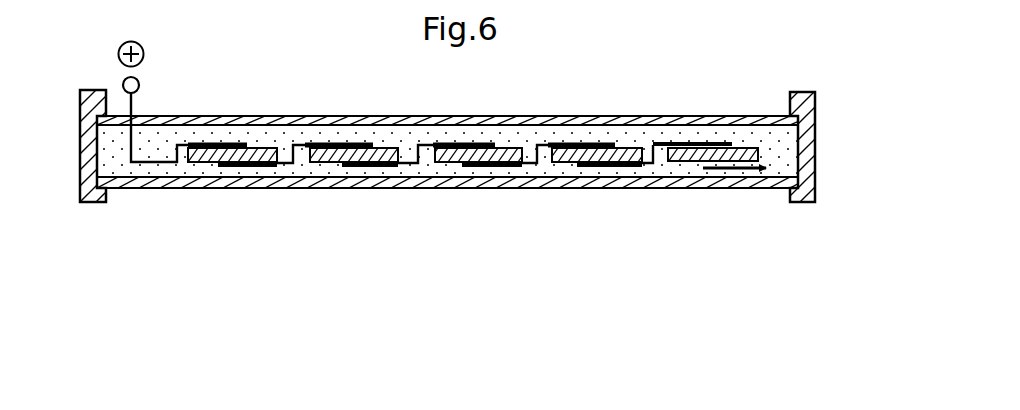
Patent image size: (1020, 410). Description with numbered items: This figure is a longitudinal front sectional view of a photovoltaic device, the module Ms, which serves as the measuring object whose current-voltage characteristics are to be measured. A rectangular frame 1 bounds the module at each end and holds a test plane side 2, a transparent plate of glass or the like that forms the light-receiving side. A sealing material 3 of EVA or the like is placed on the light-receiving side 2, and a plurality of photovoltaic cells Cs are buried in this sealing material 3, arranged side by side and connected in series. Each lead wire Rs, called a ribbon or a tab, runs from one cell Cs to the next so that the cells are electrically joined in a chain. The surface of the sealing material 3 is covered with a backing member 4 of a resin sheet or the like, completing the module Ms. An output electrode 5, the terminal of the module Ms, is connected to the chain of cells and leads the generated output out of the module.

The rectangular frame 1 is at (82, 152).
The test plane side 2 is at (272, 187).
The sealing material 3 is at (545, 170).
The backing member 4 is at (462, 116).
The output electrode 5 is at (140, 86).
The lead wire Rs is at (218, 143).
The photovoltaic cell Cs is at (678, 163).
The module Ms is at (826, 130).